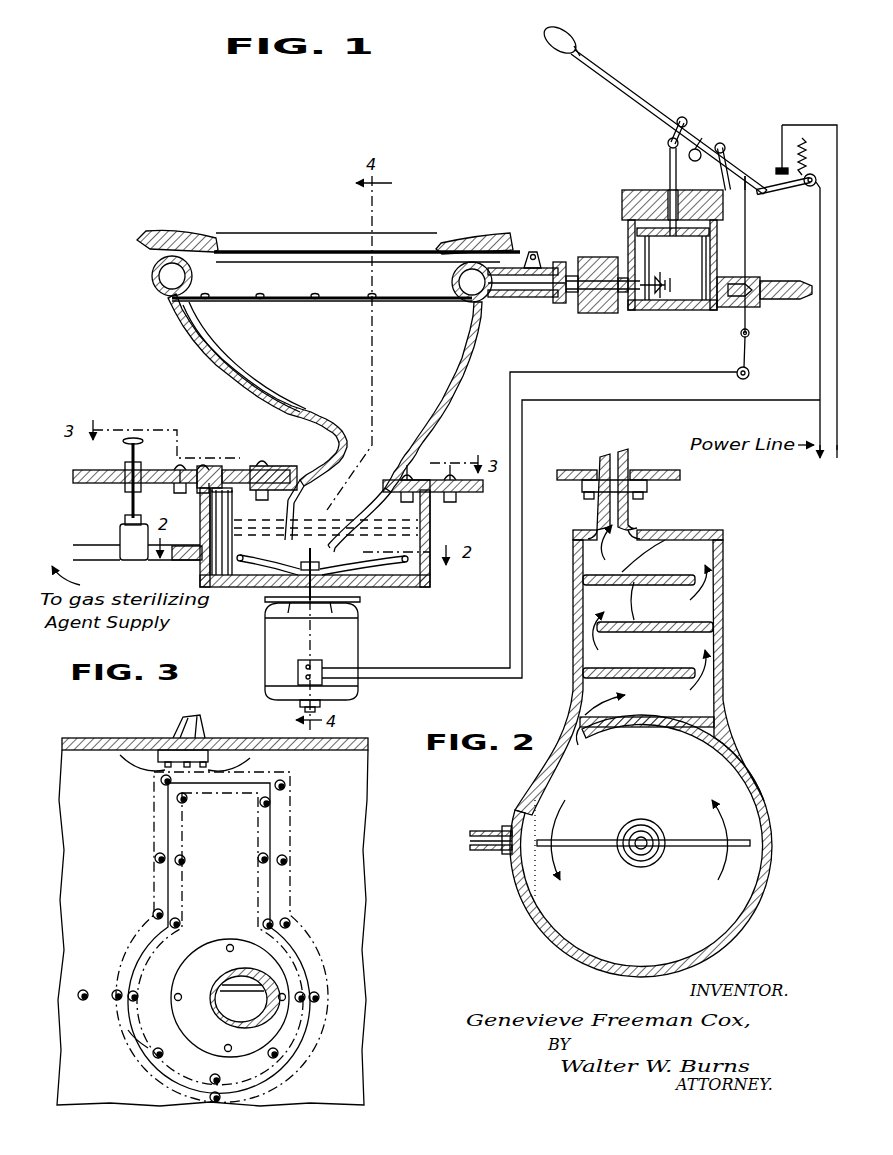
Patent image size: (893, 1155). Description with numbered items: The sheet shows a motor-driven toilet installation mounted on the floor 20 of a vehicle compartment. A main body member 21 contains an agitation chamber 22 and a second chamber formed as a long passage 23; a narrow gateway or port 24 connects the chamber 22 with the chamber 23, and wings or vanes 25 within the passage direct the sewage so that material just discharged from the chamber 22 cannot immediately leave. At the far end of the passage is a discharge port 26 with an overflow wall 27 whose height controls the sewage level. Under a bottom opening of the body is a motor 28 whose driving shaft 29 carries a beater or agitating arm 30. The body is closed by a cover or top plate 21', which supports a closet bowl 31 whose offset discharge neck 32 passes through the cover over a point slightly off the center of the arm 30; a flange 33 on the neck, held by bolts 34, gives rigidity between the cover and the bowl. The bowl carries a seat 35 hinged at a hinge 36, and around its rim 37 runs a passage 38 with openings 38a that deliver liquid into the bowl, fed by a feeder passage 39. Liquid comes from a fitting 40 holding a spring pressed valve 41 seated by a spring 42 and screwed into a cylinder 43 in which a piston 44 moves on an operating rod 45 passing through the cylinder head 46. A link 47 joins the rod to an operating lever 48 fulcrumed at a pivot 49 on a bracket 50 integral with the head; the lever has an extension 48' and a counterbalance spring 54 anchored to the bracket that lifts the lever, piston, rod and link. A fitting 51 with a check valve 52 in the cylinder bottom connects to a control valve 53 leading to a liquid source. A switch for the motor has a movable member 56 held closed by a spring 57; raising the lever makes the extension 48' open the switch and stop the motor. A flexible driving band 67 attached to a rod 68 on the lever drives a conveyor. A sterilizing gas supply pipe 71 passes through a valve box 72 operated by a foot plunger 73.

In FIG. 1, the floor 20 is at (82, 483).
In FIG. 3, the floor 20 is at (350, 815).
In FIG. 1, the main body member 21 is at (307, 570).
In FIG. 2, the main body member 21 is at (514, 877).
In FIG. 3, the main body member 21 is at (113, 1048).
In FIG. 1, the cover or top plate 21' is at (225, 505).
In FIG. 3, the cover or top plate 21' is at (216, 937).
In FIG. 1, the agitation chamber 22 is at (432, 580).
In FIG. 2, the agitation chamber 22 is at (726, 766).
In FIG. 2, the second chamber (long passage) 23 is at (694, 553).
In FIG. 2, the gateway or port 24 is at (572, 735).
In FIG. 2, the wings or vanes 25 is at (632, 628).
In FIG. 2, the discharge port 26 is at (610, 509).
In FIG. 3, the discharge port 26 is at (160, 775).
In FIG. 2, the overflow wall 27 is at (576, 553).
In FIG. 1, the motor 28 is at (358, 655).
In FIG. 1, the driving shaft 29 is at (334, 606).
In FIG. 2, the driving shaft 29 is at (646, 836).
In FIG. 1, the beater or agitating arm 30 is at (242, 590).
In FIG. 2, the beater or agitating arm 30 is at (594, 848).
In FIG. 1, the closet bowl 31 is at (200, 345).
In FIG. 1, the discharge neck 32 is at (338, 530).
In FIG. 3, the discharge neck 32 is at (228, 1024).
In FIG. 1, the flange 33 is at (296, 466).
In FIG. 3, the flange 33 is at (176, 990).
In FIG. 1, the bolts 34 is at (262, 460).
In FIG. 3, the bolts 34 is at (229, 945).
In FIG. 1, the seat 35 is at (248, 232).
In FIG. 1, the hinge 36 is at (537, 251).
In FIG. 1, the rim 37 is at (283, 262).
In FIG. 1, the passage 38 is at (153, 282).
In FIG. 1, the openings 38a is at (165, 300).
In FIG. 1, the feeder passage 39 is at (512, 295).
In FIG. 1, the fitting 40 is at (572, 305).
In FIG. 1, the spring pressed valve 41 is at (620, 312).
In FIG. 1, the spring 42 is at (644, 312).
In FIG. 1, the cylinder 43 is at (630, 230).
In FIG. 1, the piston 44 is at (648, 190).
In FIG. 1, the operating rod 45 is at (668, 148).
In FIG. 1, the cylinder head 46 is at (632, 200).
In FIG. 1, the link 47 is at (680, 116).
In FIG. 1, the operating lever 48 is at (653, 107).
In FIG. 1, the extension 48' is at (784, 200).
In FIG. 1, the pivot 49 is at (726, 150).
In FIG. 1, the bracket 50 is at (722, 170).
In FIG. 1, the fitting 51 is at (742, 338).
In FIG. 1, the check valve 52 is at (660, 300).
In FIG. 1, the control valve 53 is at (776, 308).
In FIG. 1, the counterbalance spring 54 is at (700, 150).
In FIG. 1, the movable switch member 56 is at (784, 166).
In FIG. 1, the spring 57 is at (805, 140).
In FIG. 1, the flexible driving band 67 is at (660, 372).
In FIG. 1, the rod 68 is at (746, 250).
In FIG. 1, the pipe 71 is at (82, 545).
In FIG. 2, the pipe 71 is at (480, 852).
In FIG. 1, the valve box 72 is at (128, 540).
In FIG. 1, the foot plunger 73 is at (132, 440).